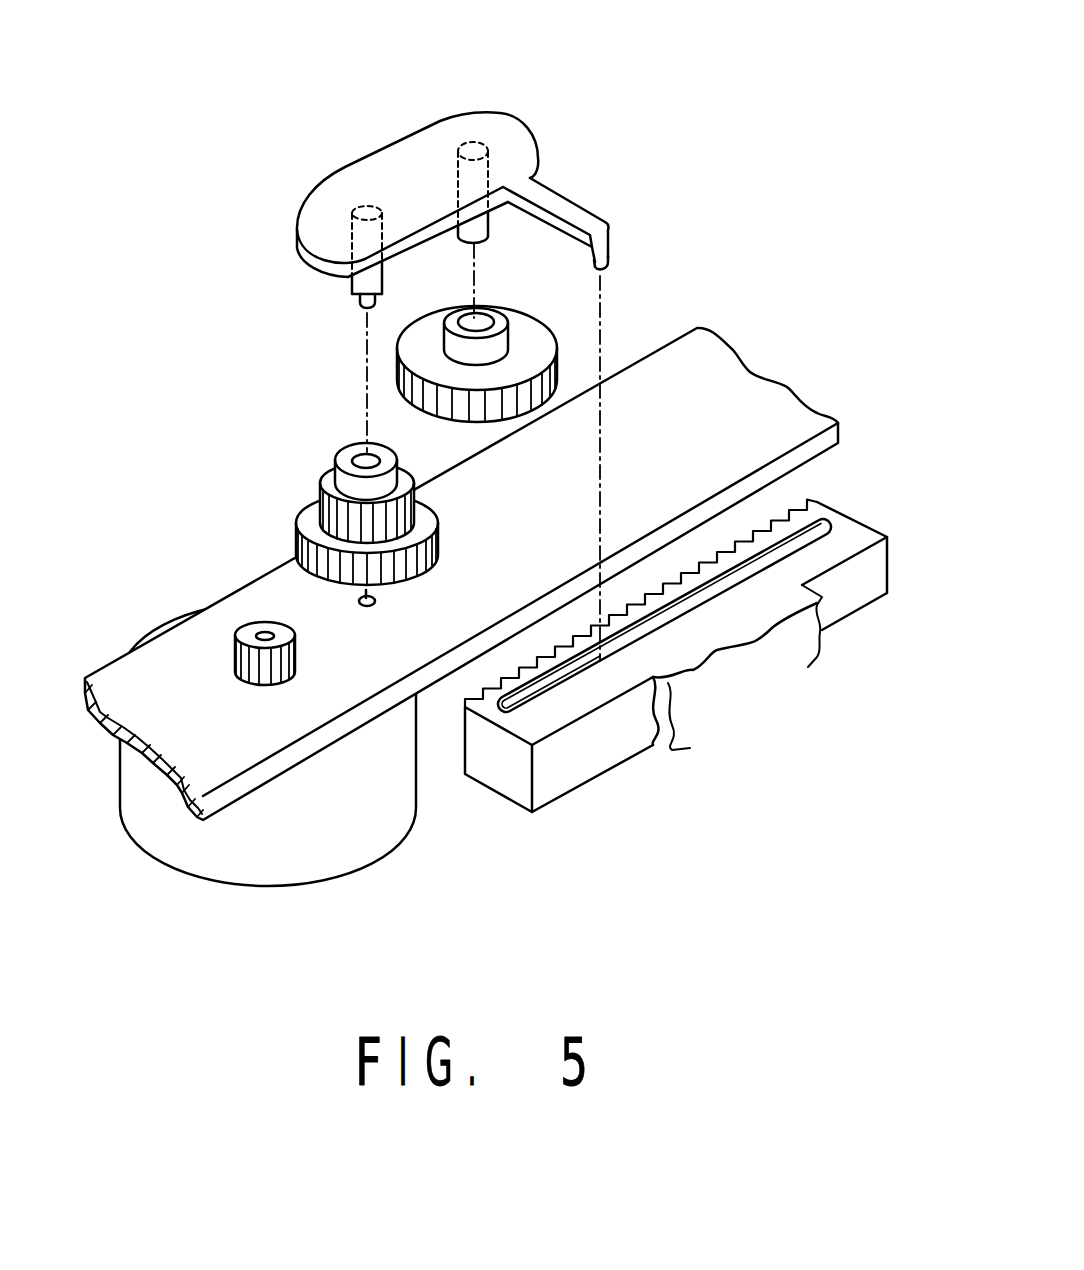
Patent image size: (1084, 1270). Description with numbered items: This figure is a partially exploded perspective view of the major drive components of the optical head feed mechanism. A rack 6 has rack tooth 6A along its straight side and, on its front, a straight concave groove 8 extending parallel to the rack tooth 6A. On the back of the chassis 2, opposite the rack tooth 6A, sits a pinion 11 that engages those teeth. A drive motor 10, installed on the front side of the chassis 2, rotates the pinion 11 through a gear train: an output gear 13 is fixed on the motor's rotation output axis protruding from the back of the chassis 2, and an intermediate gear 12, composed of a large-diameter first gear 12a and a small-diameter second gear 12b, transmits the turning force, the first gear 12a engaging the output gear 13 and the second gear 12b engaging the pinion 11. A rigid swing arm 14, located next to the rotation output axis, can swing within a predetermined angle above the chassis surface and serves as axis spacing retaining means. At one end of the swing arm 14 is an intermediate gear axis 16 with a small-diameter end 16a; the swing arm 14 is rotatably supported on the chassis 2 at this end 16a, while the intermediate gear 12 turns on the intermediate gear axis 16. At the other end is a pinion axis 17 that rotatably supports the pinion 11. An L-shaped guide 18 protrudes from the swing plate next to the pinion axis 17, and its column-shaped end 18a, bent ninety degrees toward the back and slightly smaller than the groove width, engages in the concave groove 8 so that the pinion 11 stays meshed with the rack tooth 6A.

The chassis 2 is at (748, 397).
The rack 6 is at (862, 583).
The rack tooth 6A is at (772, 512).
The concave groove 8 is at (575, 670).
The drive motor 10 is at (347, 848).
The pinion 11 is at (528, 348).
The intermediate gear 12 is at (325, 501).
The first gear 12a is at (310, 552).
The second gear 12b is at (330, 505).
The output gear 13 is at (235, 668).
The swing arm 14 is at (430, 120).
The intermediate gear axis 16 is at (352, 282).
The small-diameter end 16a is at (360, 312).
The pinion axis 17 is at (486, 240).
The guide 18 is at (574, 208).
The end 18a is at (611, 266).